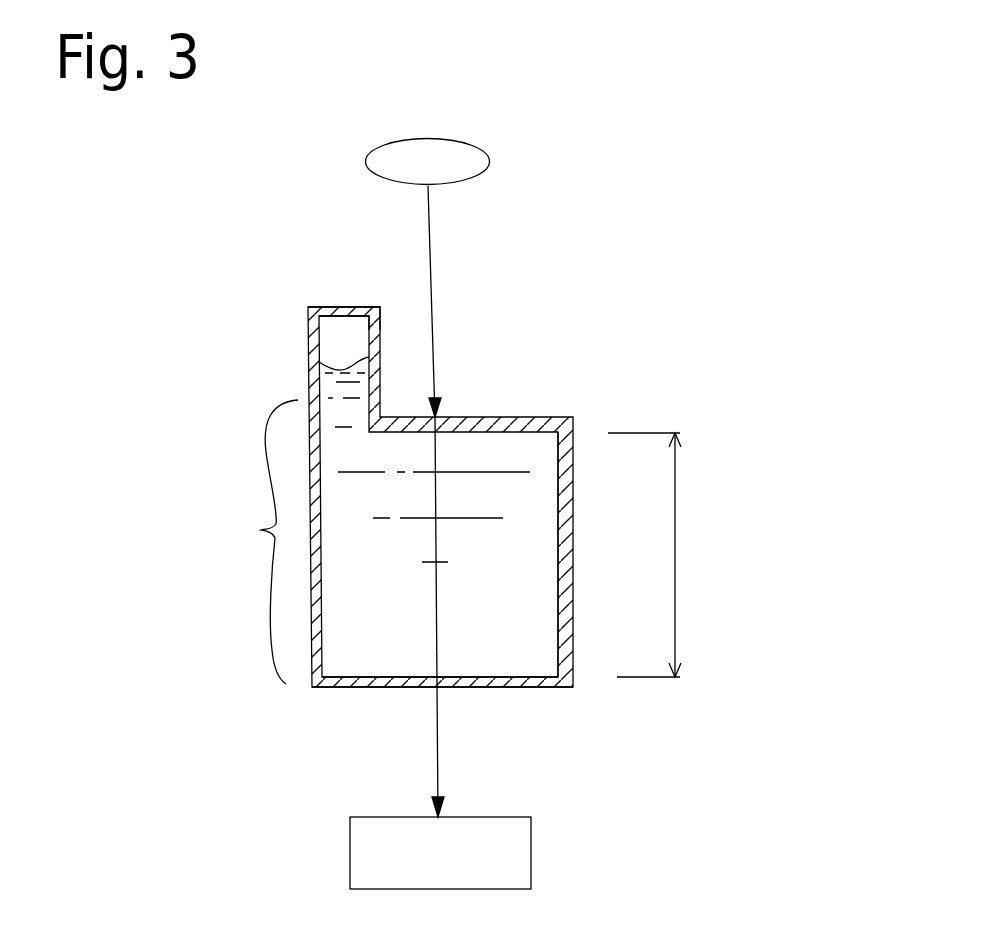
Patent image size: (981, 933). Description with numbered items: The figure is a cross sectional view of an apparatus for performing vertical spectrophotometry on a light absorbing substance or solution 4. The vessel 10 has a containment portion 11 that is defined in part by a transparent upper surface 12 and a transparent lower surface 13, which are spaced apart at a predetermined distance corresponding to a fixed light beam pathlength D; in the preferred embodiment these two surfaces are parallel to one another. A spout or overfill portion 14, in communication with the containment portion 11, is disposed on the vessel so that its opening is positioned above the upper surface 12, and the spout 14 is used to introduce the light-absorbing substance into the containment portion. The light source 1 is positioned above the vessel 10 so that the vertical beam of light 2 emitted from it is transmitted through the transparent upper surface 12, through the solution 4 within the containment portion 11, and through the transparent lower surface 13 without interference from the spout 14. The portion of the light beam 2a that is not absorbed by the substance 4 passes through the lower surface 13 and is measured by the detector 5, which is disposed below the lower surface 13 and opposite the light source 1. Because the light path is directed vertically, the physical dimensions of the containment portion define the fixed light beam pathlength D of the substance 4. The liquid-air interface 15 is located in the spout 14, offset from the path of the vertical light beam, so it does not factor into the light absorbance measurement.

The light source 1 is at (466, 141).
The vertical beam of light 2 is at (430, 263).
The light beam portion 2a is at (438, 760).
The light absorbing substance 4 is at (515, 492).
The detector 5 is at (531, 858).
The vessel 10 is at (322, 642).
The containment portion 11 is at (251, 542).
The transparent upper surface 12 is at (555, 423).
The transparent lower surface 13 is at (520, 680).
The spout 14 is at (308, 307).
The liquid-air interface 15 is at (343, 366).
The fixed light beam pathlength D is at (675, 558).